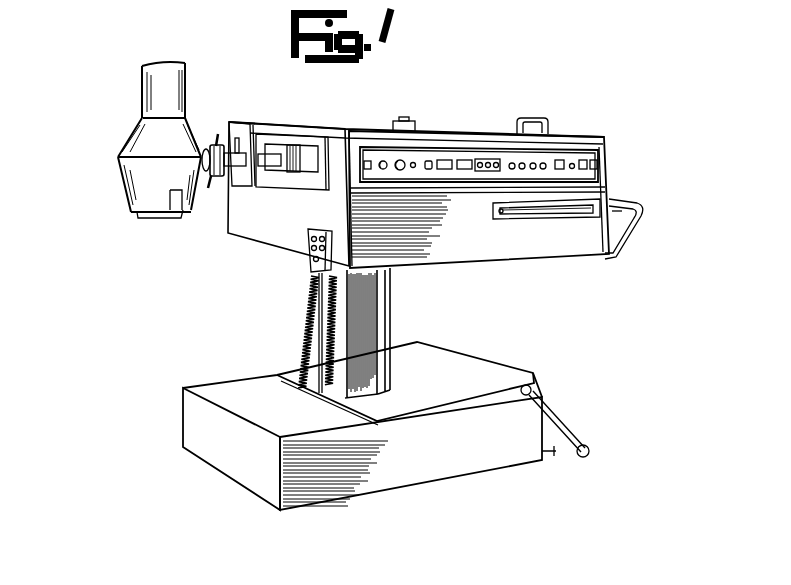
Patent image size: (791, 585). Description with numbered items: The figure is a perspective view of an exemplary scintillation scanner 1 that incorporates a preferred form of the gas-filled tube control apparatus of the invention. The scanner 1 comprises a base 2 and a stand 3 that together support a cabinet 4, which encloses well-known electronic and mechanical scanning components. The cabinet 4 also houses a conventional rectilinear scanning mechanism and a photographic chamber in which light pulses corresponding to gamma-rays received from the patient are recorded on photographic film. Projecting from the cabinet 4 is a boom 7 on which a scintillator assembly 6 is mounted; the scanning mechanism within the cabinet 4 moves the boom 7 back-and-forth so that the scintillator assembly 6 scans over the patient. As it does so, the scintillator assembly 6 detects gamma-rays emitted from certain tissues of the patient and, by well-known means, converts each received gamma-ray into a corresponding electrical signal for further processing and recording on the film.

The scintillation scanner 1 is at (653, 145).
The base 2 is at (212, 455).
The stand 3 is at (392, 320).
The cabinet 4 is at (457, 122).
The scintillator assembly 6 is at (125, 131).
The boom 7 is at (214, 146).